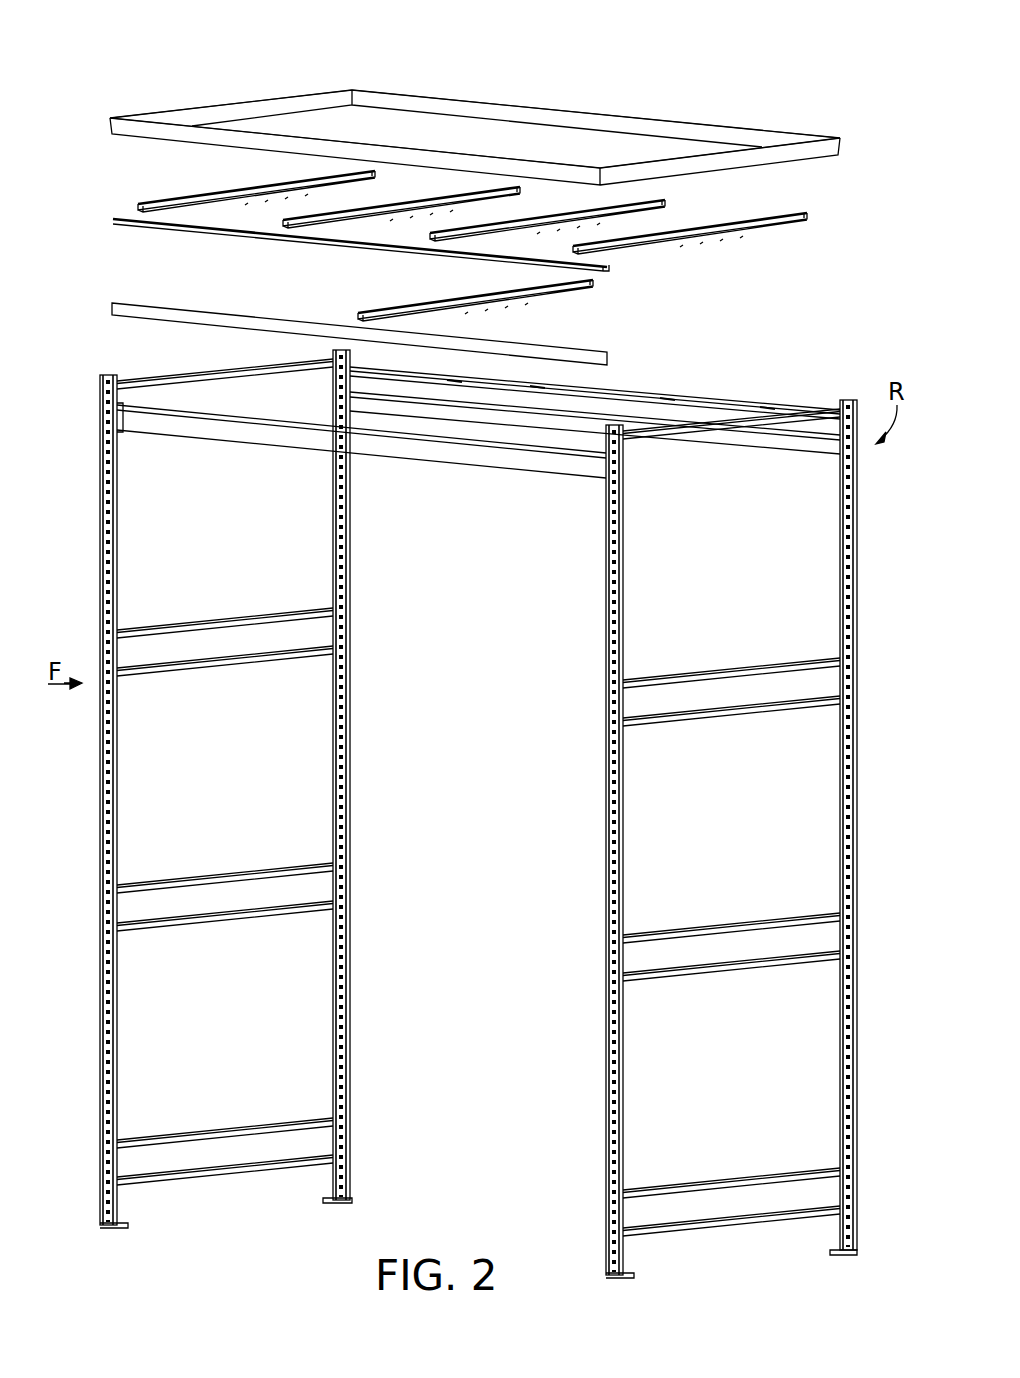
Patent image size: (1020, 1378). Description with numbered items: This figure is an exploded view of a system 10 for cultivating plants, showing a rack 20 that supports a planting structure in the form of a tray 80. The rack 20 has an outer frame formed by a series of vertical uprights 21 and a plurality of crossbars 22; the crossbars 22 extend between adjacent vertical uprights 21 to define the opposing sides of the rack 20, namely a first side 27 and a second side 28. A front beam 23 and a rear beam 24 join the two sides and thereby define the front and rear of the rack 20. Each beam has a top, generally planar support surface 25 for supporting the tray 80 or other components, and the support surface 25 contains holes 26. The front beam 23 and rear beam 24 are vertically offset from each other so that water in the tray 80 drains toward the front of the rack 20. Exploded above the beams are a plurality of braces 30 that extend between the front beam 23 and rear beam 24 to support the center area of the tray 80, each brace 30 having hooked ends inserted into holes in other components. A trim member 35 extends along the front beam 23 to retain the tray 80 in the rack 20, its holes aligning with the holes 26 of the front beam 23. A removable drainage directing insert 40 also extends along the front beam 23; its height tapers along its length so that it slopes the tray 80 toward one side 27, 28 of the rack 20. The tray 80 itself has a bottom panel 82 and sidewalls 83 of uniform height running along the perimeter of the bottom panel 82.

The system 10 is at (78, 68).
The rack 20 is at (479, 1180).
The vertical upright 21 is at (860, 763).
The crossbar 22 is at (175, 390).
The front beam 23 is at (528, 454).
The rear beam 24 is at (680, 418).
The support surface 25 is at (355, 430).
The holes 26 is at (448, 383).
The first side 27 is at (62, 408).
The second side 28 is at (885, 655).
The brace 30 is at (222, 195).
The trim member 35 is at (191, 314).
The drainage directing insert 40 is at (330, 245).
The tray 80 is at (610, 147).
The bottom panel 82 is at (530, 137).
The sidewalls 83 is at (227, 117).